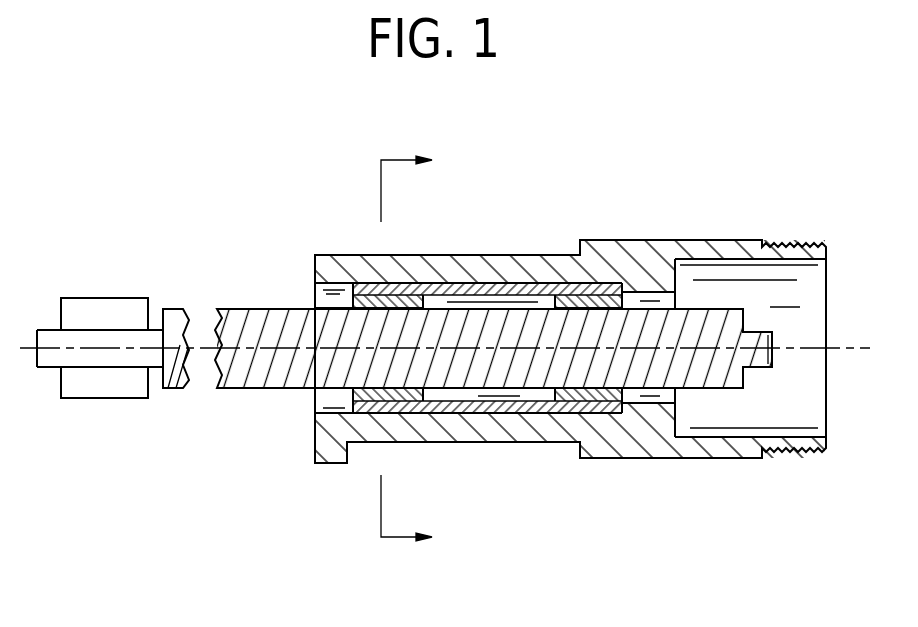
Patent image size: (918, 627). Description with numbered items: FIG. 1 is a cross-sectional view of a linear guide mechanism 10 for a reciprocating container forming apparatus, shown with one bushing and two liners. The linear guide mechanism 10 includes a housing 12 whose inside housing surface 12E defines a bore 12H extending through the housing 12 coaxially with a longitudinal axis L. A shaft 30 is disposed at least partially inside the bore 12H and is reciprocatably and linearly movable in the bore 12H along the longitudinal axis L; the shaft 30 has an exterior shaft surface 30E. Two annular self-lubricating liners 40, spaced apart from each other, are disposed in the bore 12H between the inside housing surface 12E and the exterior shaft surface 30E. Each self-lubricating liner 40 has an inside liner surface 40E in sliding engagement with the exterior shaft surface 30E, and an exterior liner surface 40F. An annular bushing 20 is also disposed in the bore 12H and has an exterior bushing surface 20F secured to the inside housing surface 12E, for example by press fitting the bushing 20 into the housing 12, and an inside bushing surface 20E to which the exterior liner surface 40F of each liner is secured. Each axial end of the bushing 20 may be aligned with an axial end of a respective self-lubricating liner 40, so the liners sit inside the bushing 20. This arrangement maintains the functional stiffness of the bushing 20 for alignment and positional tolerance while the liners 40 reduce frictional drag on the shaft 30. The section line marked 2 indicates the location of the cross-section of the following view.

The linear guide mechanism 10 is at (792, 208).
The housing 12 is at (548, 256).
The inside housing surface 12E is at (486, 296).
The bore 12H is at (295, 292).
The bushing 20 is at (503, 408).
The inside bushing surface 20E is at (463, 392).
The exterior bushing surface 20F is at (548, 420).
The shaft 30 is at (253, 370).
The exterior shaft surface 30E is at (276, 390).
The self-lubricating liner 40 is at (408, 300).
The inside liner surface 40E is at (378, 306).
The exterior liner surface 40F is at (357, 402).
The longitudinal axis L is at (843, 348).
The section line 2- 2 is at (406, 351).